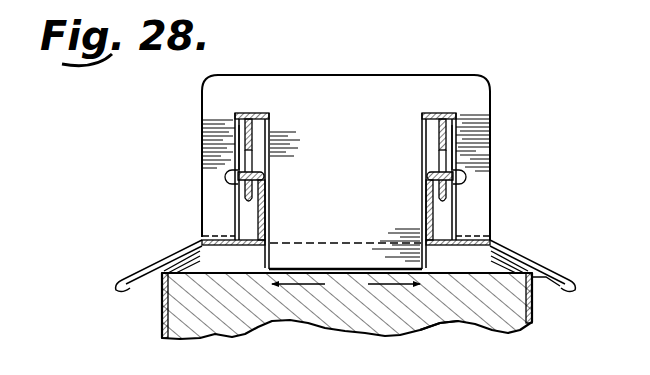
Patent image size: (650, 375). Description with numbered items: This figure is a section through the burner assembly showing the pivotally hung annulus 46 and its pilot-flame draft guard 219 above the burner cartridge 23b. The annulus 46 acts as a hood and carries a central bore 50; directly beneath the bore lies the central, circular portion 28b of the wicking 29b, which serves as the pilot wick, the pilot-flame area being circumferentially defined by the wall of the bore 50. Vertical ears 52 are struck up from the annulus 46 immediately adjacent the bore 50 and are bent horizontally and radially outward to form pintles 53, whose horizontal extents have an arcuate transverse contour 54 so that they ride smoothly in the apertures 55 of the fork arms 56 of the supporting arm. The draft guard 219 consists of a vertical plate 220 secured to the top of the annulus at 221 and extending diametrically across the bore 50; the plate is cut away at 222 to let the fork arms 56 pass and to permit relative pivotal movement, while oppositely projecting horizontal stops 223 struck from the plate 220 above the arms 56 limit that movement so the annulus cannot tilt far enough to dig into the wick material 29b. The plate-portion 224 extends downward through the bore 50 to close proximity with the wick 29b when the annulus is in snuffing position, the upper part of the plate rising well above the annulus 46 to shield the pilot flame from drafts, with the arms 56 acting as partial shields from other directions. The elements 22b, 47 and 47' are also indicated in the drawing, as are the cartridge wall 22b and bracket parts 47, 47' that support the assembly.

The pilot-flame draft guard 219 is at (272, 74).
The vertical plate 220 is at (350, 66).
The securing point of plate to annulus 221 is at (227, 246).
The cut-away portion of plate 222 is at (269, 143).
The horizontal stops 223 is at (262, 113).
The plate-portion 224 is at (301, 276).
The cabinet wall 22b is at (162, 317).
The burner cartridge 23b is at (536, 318).
The central circular portion of wicking 28b is at (346, 286).
The wicking 29b is at (436, 324).
The annulus 46 is at (196, 238).
The bracket 47 is at (346, 266).
The bracket arm 47' is at (348, 175).
The bore 50 is at (426, 249).
The vertical ears 52 is at (270, 224).
The pintles 53 is at (234, 185).
The arcuate transverse cross-sectional contour 54 is at (258, 177).
The apertures 55 is at (246, 154).
The fork arms 56 is at (254, 196).